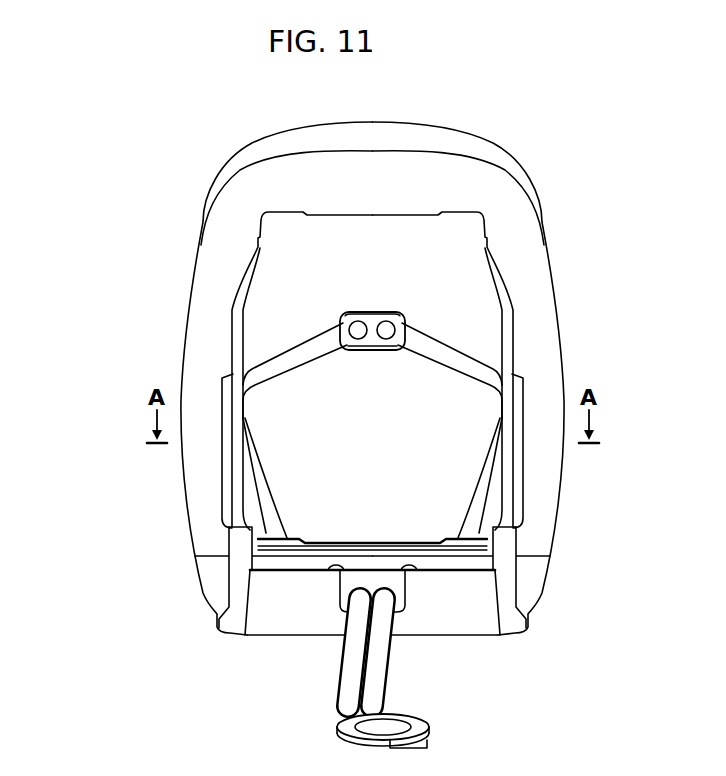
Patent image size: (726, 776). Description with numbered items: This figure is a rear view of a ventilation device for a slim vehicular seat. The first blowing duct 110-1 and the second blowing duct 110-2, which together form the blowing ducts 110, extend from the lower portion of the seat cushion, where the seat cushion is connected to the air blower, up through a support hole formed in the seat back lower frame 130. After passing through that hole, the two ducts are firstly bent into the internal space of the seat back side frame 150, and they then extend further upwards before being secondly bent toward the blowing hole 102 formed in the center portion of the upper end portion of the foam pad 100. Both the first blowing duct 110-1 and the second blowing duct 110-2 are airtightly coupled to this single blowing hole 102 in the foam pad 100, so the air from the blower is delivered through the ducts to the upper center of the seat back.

The foam pad 100 is at (188, 290).
The blowing hole 102 is at (374, 320).
The blowing duct 110 is at (372, 430).
The first blowing duct 110-1 is at (268, 503).
The second blowing duct 110-2 is at (482, 492).
The seat back lower frame 130 is at (268, 580).
The seat back side frame 150 is at (227, 470).